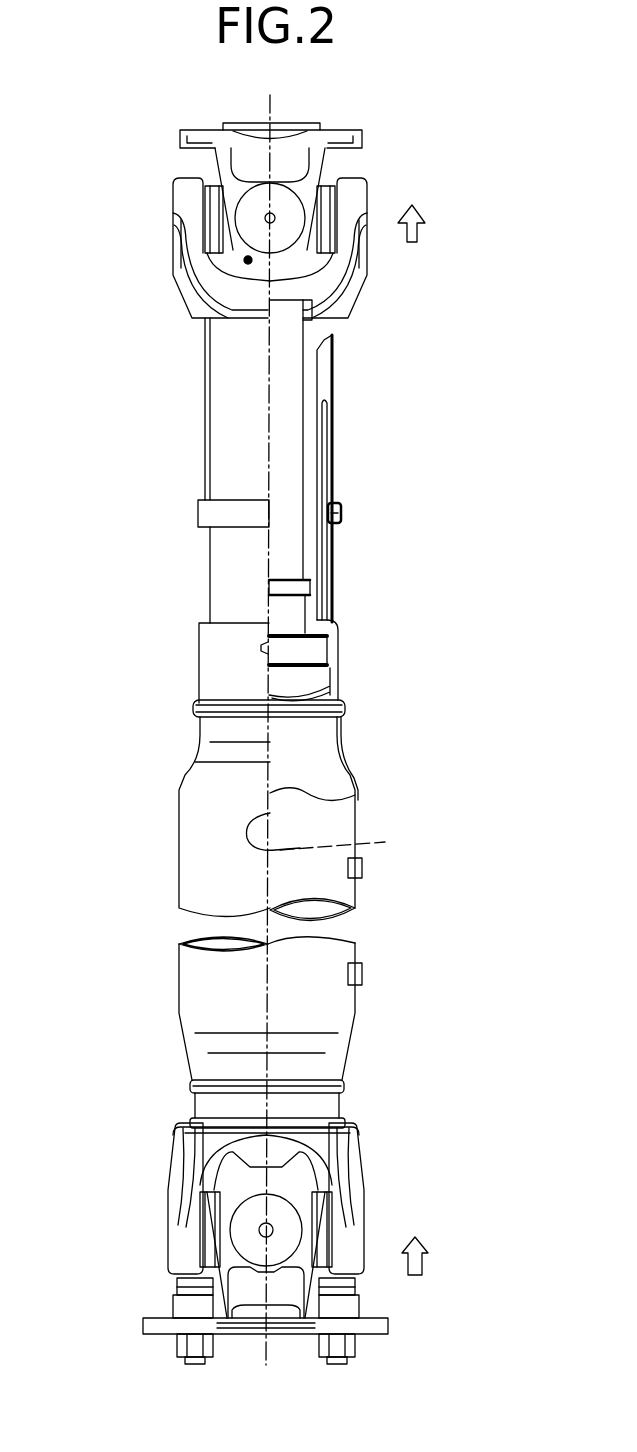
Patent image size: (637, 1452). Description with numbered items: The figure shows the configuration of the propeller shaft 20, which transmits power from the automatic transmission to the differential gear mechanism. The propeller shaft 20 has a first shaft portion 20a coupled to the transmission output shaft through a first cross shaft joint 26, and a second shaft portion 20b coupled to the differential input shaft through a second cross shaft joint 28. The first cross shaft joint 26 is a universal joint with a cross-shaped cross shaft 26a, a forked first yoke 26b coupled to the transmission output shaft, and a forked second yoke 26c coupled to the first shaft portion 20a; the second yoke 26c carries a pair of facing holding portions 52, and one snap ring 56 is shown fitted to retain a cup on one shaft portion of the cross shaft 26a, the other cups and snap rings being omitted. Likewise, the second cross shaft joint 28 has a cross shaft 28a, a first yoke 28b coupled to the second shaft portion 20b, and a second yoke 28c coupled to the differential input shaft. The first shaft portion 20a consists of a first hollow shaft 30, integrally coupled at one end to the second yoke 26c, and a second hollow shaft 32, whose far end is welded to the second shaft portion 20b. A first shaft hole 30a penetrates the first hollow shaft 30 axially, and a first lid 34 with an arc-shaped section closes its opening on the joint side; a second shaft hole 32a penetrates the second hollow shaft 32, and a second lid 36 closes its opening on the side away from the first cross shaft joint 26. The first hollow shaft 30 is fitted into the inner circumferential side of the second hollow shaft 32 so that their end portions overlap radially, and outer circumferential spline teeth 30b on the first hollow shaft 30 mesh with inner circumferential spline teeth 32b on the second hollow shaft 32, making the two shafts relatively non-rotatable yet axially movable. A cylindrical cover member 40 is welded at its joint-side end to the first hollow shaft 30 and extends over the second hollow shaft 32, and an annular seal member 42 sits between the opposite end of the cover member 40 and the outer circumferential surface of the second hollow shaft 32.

The propeller shaft 20 is at (270, 724).
The first shaft portion 20a is at (251, 502).
The second shaft portion 20b is at (255, 1130).
The first cross shaft joint 26 is at (230, 201).
The cross shaft 26a is at (330, 280).
The first yoke 26b is at (220, 162).
The second yoke 26c is at (217, 281).
The second cross shaft joint 28 is at (255, 1243).
The cross shaft 28a is at (207, 1197).
The first yoke 28b is at (352, 1165).
The second yoke 28c is at (217, 1280).
The first hollow shaft 30 is at (281, 461).
The first shaft hole 30a is at (320, 387).
The outer circumferential spline teeth 30b is at (322, 538).
The second hollow shaft 32 is at (307, 666).
The second shaft hole 32a is at (325, 648).
The inner circumferential spline teeth 32b is at (325, 605).
The first lid 34 is at (346, 305).
The second lid 36 is at (292, 700).
The cover member 40 is at (387, 478).
The seal member 42 is at (343, 512).
The holding portions 52 is at (257, 207).
The snap ring 56 is at (288, 206).